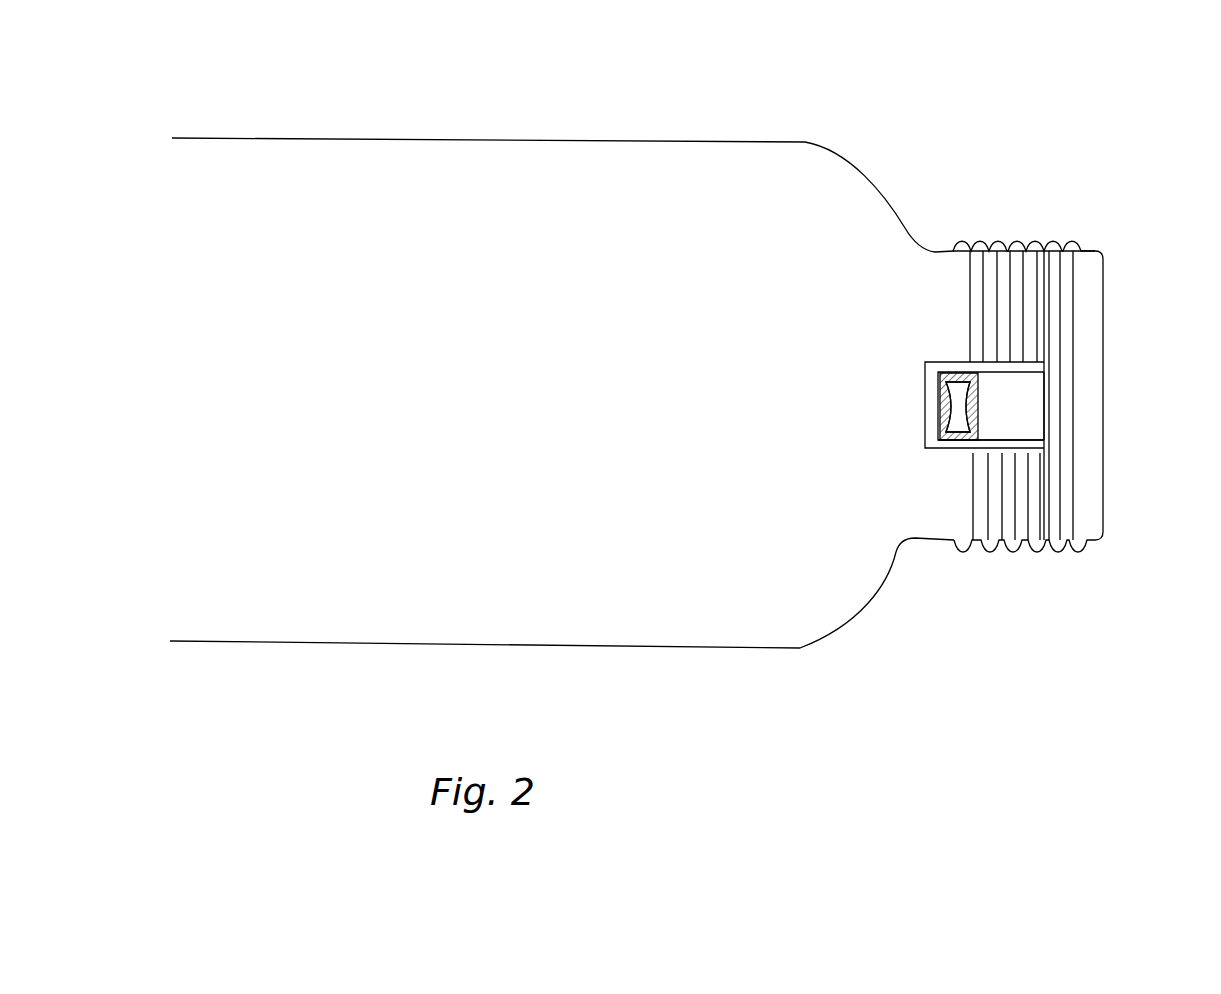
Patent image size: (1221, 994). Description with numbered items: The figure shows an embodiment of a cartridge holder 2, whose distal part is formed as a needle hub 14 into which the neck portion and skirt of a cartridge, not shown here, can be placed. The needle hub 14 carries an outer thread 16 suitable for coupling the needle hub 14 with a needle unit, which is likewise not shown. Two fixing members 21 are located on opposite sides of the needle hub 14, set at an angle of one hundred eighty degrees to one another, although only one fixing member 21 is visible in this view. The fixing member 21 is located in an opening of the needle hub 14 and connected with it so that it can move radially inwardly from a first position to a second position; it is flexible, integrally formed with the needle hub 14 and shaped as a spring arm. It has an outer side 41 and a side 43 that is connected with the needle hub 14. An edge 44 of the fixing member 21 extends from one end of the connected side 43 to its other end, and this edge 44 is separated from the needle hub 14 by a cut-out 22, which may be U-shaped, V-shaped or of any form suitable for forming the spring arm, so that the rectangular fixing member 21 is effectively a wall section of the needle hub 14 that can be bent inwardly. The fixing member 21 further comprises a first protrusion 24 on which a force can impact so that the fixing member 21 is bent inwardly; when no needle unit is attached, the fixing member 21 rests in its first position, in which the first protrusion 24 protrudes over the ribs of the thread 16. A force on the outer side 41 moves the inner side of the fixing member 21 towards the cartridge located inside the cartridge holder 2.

The cartridge holder 2 is at (826, 121).
The needle hub 14 is at (1088, 248).
The outer thread 16 is at (1003, 548).
The fixing member 21 is at (960, 375).
The cut-out 22 is at (929, 449).
The first protrusion 24 is at (962, 404).
The outer side 41 is at (1017, 428).
The side 43 is at (1026, 444).
The edge 44 is at (938, 406).